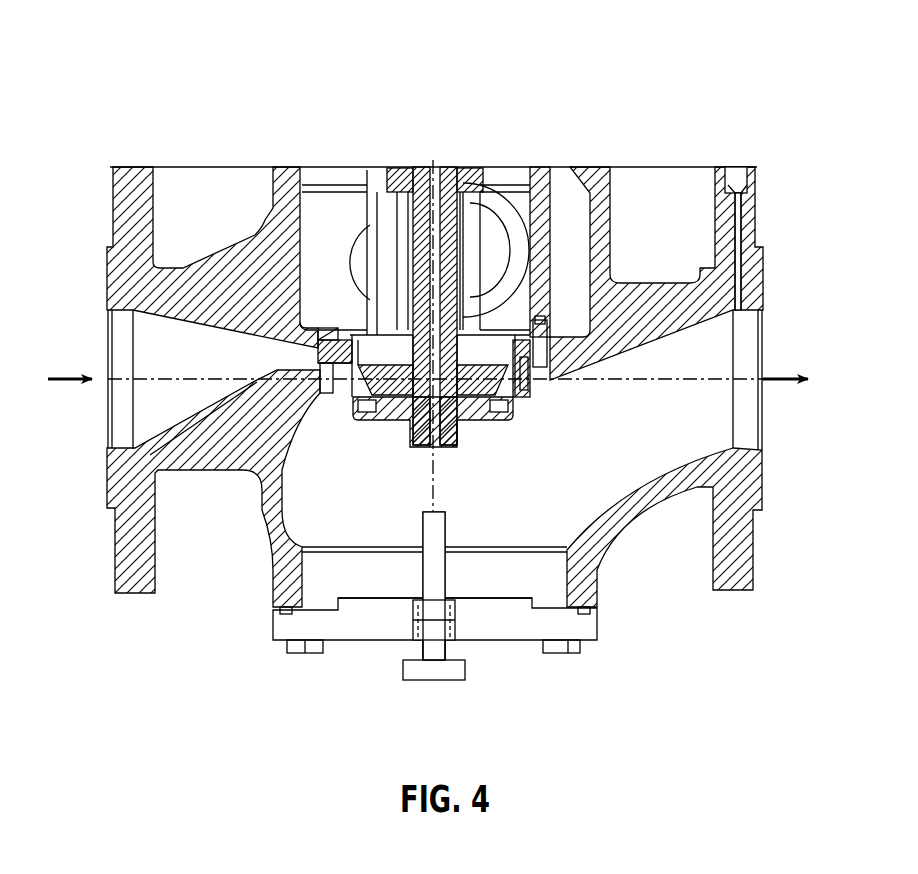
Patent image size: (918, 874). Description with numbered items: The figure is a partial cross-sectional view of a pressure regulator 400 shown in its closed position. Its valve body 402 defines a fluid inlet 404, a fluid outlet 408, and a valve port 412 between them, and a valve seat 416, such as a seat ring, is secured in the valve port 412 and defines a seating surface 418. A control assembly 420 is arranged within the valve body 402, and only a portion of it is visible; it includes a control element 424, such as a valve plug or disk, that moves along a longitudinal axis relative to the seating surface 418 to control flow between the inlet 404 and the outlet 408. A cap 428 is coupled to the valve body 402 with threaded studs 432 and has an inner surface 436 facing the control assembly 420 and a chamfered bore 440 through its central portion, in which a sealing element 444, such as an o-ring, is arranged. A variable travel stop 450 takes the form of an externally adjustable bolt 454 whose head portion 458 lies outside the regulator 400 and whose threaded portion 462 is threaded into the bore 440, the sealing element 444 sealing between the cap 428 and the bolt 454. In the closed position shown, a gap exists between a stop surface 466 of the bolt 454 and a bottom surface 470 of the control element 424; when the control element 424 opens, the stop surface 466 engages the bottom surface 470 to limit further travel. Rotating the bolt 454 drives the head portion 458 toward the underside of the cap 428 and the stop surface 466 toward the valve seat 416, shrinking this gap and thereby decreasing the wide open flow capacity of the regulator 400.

The pressure regulator 400 is at (652, 96).
The valve body 402 is at (436, 357).
The fluid inlet 404 is at (108, 410).
The fluid outlet 408 is at (762, 333).
The valve port 412 is at (481, 363).
The valve seat 416 is at (540, 383).
The seating surface 418 is at (520, 393).
The control assembly 420 is at (373, 432).
The control element 424 is at (475, 403).
The cap 428 is at (380, 658).
The threaded studs 432 is at (305, 656).
The surface 436 is at (372, 598).
The bore 440 is at (462, 603).
The sealing element 444 is at (470, 638).
The variable travel stop 450 is at (484, 668).
The externally adjustable bolt 454 is at (615, 689).
The head portion 458 is at (450, 681).
The threaded portion 462 is at (446, 565).
The stop surface 466 is at (440, 512).
The bottom surface 470 is at (427, 447).